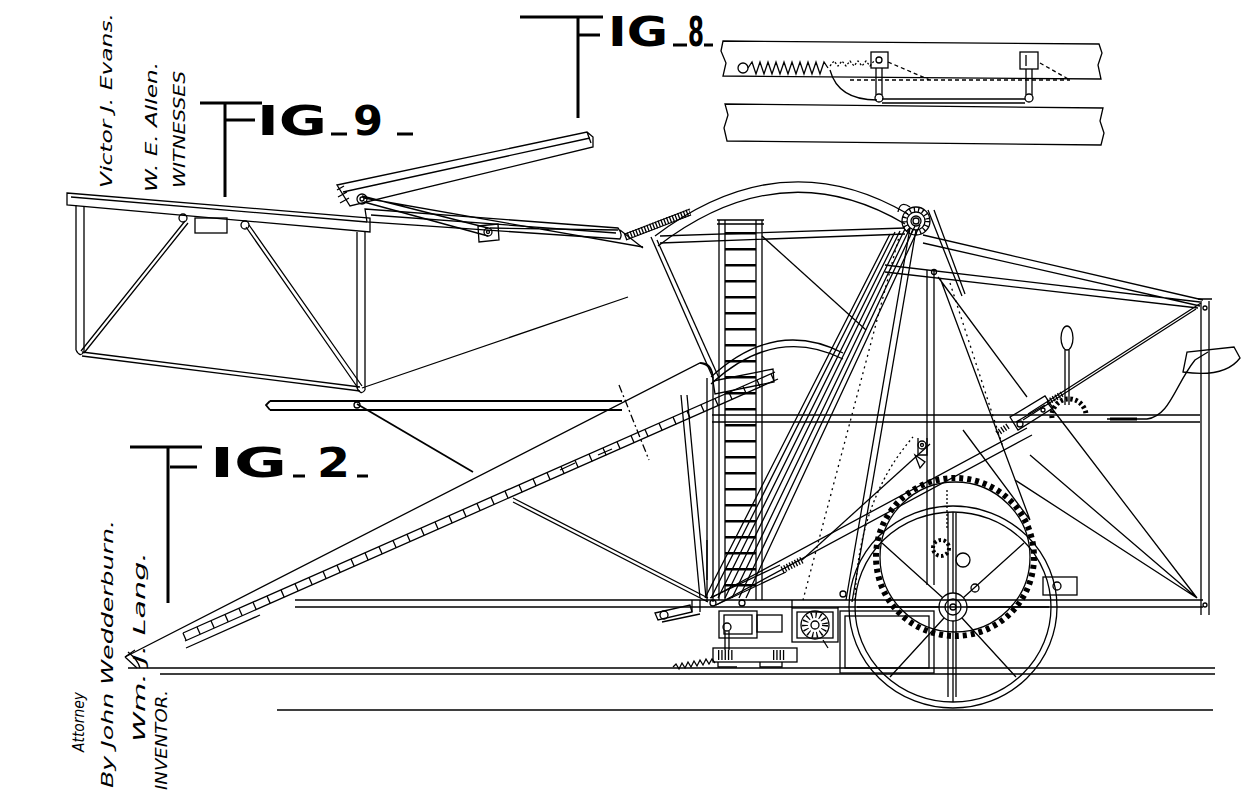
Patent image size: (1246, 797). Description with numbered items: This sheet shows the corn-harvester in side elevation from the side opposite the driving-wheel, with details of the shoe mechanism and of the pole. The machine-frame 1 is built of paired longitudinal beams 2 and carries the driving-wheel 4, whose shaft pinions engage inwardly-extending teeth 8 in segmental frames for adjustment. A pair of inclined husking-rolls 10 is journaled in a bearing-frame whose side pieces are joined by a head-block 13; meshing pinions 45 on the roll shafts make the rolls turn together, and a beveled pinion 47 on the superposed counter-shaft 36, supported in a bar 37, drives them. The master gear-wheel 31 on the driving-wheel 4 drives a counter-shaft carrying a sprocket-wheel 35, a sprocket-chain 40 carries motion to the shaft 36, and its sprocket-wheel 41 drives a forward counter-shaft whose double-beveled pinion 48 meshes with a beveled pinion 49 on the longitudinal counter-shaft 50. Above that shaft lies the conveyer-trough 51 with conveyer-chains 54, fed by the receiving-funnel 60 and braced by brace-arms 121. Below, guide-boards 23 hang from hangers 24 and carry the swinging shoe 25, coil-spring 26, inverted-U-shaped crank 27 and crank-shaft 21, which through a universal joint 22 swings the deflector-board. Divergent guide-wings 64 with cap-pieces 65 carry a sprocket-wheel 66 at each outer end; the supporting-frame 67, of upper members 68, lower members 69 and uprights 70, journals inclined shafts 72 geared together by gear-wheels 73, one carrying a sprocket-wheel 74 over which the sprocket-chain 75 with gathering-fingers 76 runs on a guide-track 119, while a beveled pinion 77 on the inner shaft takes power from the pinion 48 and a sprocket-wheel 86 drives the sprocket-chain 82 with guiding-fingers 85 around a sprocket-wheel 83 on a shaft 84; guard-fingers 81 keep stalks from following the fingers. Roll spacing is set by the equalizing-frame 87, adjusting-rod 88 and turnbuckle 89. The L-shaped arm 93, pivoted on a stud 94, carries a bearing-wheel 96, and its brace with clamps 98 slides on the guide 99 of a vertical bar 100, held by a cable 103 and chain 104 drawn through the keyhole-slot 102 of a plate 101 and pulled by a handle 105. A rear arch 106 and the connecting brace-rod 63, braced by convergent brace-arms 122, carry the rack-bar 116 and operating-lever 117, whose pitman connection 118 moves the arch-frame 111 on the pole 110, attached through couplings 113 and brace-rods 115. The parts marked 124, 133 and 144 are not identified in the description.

In FIG. 2, the machine-frame 1 is at (1173, 512).
In FIG. 2, the longitudinal beams 2 is at (464, 598).
In FIG. 2, the driving-wheel 4 is at (1048, 645).
In FIG. 2, the inwardly-extending teeth 8 is at (852, 647).
In FIG. 2, the husking-rolls 10 is at (796, 493).
In FIG. 2, the transverse head-block 13 is at (633, 424).
In FIG. 8, the crank-shaft 21 is at (889, 56).
In FIG. 2, the crank-shaft 21 is at (720, 639).
In FIG. 2, the universal joint 22 is at (732, 629).
In FIG. 8, the guide-boards 23 is at (912, 93).
In FIG. 2, the guide-boards 23 is at (540, 658).
In FIG. 2, the hangers 24 is at (930, 660).
In FIG. 8, the swinging shoe 25 is at (1000, 104).
In FIG. 2, the swinging shoe 25 is at (753, 662).
In FIG. 8, the coil-spring 26 is at (789, 72).
In FIG. 2, the coil-spring 26 is at (690, 670).
In FIG. 8, the inverted-U-shaped crank 27 is at (1042, 60).
In FIG. 2, the inverted-U-shaped crank 27 is at (774, 667).
In FIG. 2, the master gear-wheel 31 is at (955, 557).
In FIG. 2, the sprocket-wheel 35 is at (1080, 585).
In FIG. 2, the superposed counter-shaft 36 is at (932, 222).
In FIG. 2, the bar 37 is at (905, 392).
In FIG. 2, the sprocket-chain 40 is at (951, 362).
In FIG. 2, the sprocket-wheel 41 is at (920, 206).
In FIG. 2, the pinions 45 is at (900, 229).
In FIG. 2, the beveled pinion 47 is at (903, 210).
In FIG. 2, the double-beveled pinion 48 is at (823, 641).
In FIG. 2, the beveled pinion 49 is at (800, 618).
In FIG. 2, the counter-shaft 50 is at (773, 624).
In FIG. 2, the conveyer-trough 51 is at (707, 494).
In FIG. 2, the conveyer-chains 54 is at (758, 298).
In FIG. 2, the receiving-funnel 60 is at (707, 562).
In FIG. 2, the connecting brace-rod 63 is at (1136, 426).
In FIG. 2, the guide-wings 64 is at (419, 510).
In FIG. 2, the cap-pieces 65 is at (138, 658).
In FIG. 2, the sprocket-wheel 66 is at (206, 638).
In FIG. 2, the supporting-frame 67 is at (781, 206).
In FIG. 2, the upper members 68 is at (792, 199).
In FIG. 2, the lower members 69 is at (784, 356).
In FIG. 2, the uprights 70 is at (684, 312).
In FIG. 2, the downwardly-inclined shafts 72 is at (697, 339).
In FIG. 2, the gear-wheels 73 is at (663, 230).
In FIG. 2, the sprocket-wheel 74 is at (705, 388).
In FIG. 2, the sprocket-chain 75 is at (568, 468).
In FIG. 2, the gathering-fingers 76 is at (603, 456).
In FIG. 2, the beveled pinion 77 is at (823, 640).
In FIG. 2, the guard-fingers 81 is at (774, 378).
In FIG. 2, the sprocket-chain 82 is at (662, 624).
In FIG. 2, the sprocket-wheel 83 is at (630, 614).
In FIG. 2, the shaft 84 is at (657, 613).
In FIG. 2, the guiding-fingers 85 is at (693, 618).
In FIG. 2, the sprocket-wheel 86 is at (792, 563).
In FIG. 2, the equalizing-frame 87 is at (1057, 292).
In FIG. 2, the sectional adjusting-rod 88 is at (1122, 362).
In FIG. 2, the turnbuckle 89 is at (1040, 397).
In FIG. 2, the L-shaped arm 93 is at (857, 597).
In FIG. 2, the stud 94 is at (705, 594).
In FIG. 2, the bearing-wheel 96 is at (1045, 640).
In FIG. 2, the clamp 98 is at (933, 546).
In FIG. 2, the guide 99 is at (972, 549).
In FIG. 2, the vertical bar 100 is at (932, 500).
In FIG. 2, the plate 101 is at (918, 446).
In FIG. 2, the keyhole-slot 102 is at (913, 460).
In FIG. 2, the cable 103 is at (980, 585).
In FIG. 2, the chain 104 is at (962, 525).
In FIG. 2, the knob or handle 105 is at (906, 482).
In FIG. 2, the arch 106 is at (1208, 451).
In FIG. 9, the pole 110 is at (489, 168).
In FIG. 2, the pole 110 is at (442, 406).
In FIG. 2, the arch-frame 111 is at (684, 479).
In FIG. 9, the couplings 113 is at (489, 240).
In FIG. 9, the brace-rods 115 is at (433, 216).
In FIG. 2, the brace-rods 115 is at (437, 452).
In FIG. 2, the segmental rack-bar 116 is at (1080, 400).
In FIG. 2, the operating-lever 117 is at (1070, 360).
In FIG. 2, the pitman connection 118 is at (772, 414).
In FIG. 2, the guide-track 119 is at (455, 519).
In FIG. 2, the brace-arms 121 is at (803, 271).
In FIG. 2, the convergent brace-arms 122 is at (1140, 573).
In FIG. 2, the pivot 124 is at (840, 591).
In FIG. 2, the fin 133 is at (1235, 360).
In FIG. 2, the chain 144 is at (852, 436).